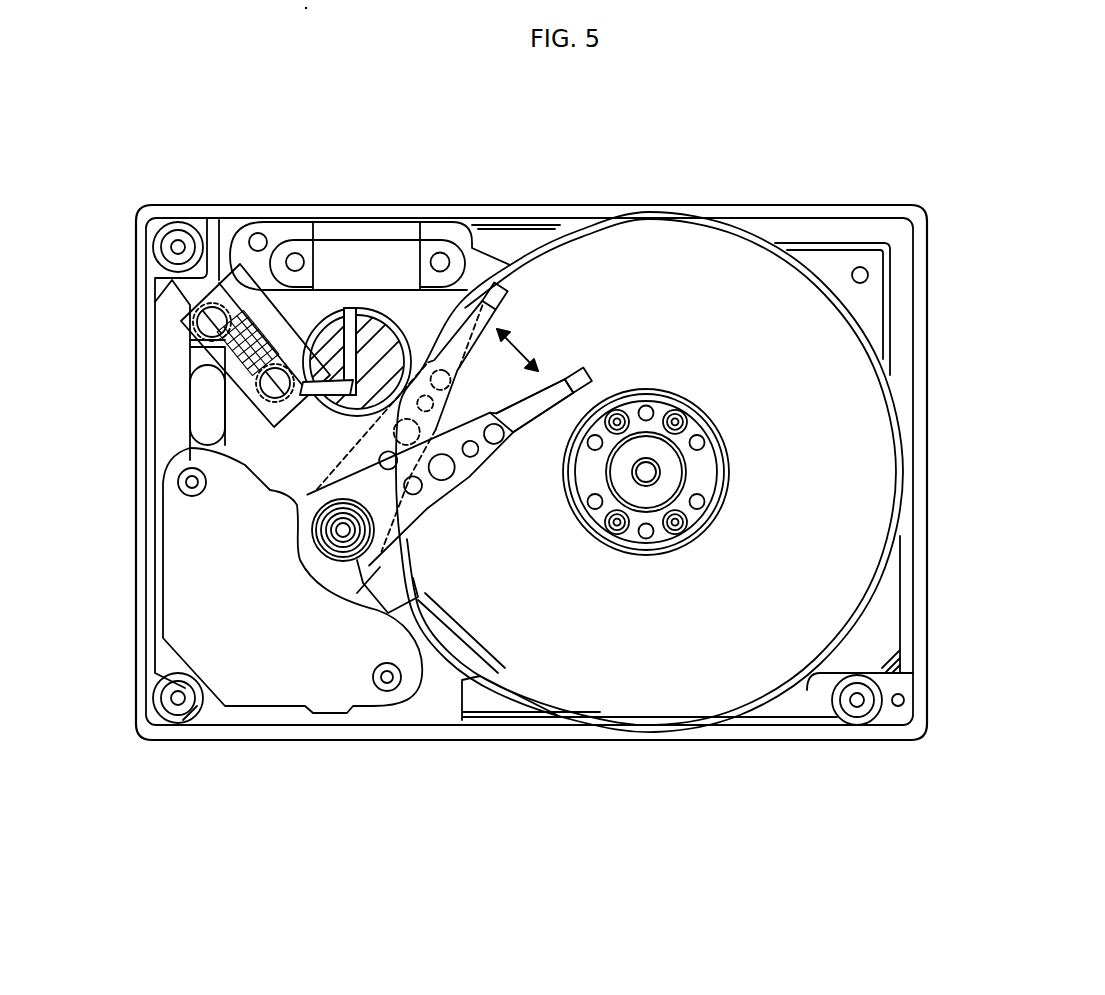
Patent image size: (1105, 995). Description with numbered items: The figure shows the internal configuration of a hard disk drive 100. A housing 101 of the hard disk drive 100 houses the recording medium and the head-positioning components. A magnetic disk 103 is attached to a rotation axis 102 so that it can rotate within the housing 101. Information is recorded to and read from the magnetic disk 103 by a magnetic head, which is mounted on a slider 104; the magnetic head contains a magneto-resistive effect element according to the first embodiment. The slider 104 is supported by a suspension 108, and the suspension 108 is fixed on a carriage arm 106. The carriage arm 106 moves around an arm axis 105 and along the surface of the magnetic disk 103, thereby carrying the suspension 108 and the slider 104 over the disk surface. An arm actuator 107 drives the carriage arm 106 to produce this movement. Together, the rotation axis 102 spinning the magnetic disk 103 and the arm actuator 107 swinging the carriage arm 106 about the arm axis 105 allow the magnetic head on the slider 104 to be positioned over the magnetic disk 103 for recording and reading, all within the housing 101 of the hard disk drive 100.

The hard disk drive 100 is at (1013, 145).
The housing 101 is at (783, 206).
The rotation axis 102 is at (667, 485).
The magnetic disk 103 is at (860, 423).
The slider 104 is at (580, 373).
The arm axis 105 is at (343, 530).
The carriage arm 106 is at (423, 507).
The arm actuator 107 is at (253, 687).
The suspension 108 is at (523, 413).